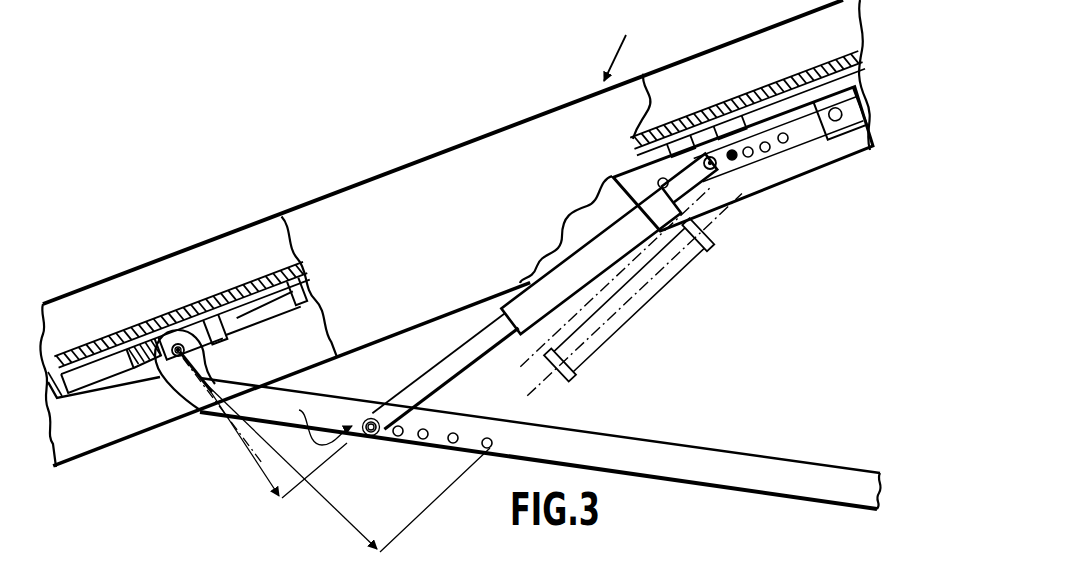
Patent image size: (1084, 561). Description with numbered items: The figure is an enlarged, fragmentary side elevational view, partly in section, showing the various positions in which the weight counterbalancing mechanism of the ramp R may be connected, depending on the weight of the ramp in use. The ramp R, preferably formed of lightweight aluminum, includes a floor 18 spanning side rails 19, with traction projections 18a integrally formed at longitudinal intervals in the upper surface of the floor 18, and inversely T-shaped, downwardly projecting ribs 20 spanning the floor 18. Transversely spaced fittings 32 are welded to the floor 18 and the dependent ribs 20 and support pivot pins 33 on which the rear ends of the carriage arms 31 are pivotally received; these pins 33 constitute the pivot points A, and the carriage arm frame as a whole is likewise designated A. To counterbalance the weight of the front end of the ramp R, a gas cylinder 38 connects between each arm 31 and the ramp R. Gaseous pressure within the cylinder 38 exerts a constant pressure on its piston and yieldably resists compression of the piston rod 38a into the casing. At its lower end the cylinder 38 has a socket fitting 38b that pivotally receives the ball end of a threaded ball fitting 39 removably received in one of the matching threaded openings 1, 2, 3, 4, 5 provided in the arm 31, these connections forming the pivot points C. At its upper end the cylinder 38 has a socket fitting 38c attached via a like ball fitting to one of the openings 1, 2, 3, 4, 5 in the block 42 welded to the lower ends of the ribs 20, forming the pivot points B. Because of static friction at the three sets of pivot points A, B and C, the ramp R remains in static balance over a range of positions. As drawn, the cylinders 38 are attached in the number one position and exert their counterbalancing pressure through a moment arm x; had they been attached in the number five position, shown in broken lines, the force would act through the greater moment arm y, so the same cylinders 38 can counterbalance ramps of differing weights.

The side rails 19 is at (76, 300).
The floor 18 is at (214, 291).
The traction projections 18a is at (120, 340).
The ribs 20 is at (241, 284).
The fittings 32 is at (113, 383).
The pivot pins 33 is at (177, 343).
The arms 31 is at (652, 437).
The gas cylinders 38 is at (562, 292).
The piston rods 38a is at (465, 355).
The socket fitting 38b is at (370, 410).
The socket fitting 38c is at (705, 110).
The ball fittings 39 is at (362, 421).
The blocks 42 is at (793, 117).
The opening 1 is at (368, 435).
The opening 2 is at (396, 437).
The opening 3 is at (421, 440).
The opening 4 is at (451, 445).
The opening 5 is at (488, 449).
The pivot points A is at (168, 405).
The pivot points B is at (707, 163).
The pivot points C is at (317, 421).
The ramp R is at (618, 43).
The moment arm x is at (255, 467).
The moment arm y is at (333, 513).